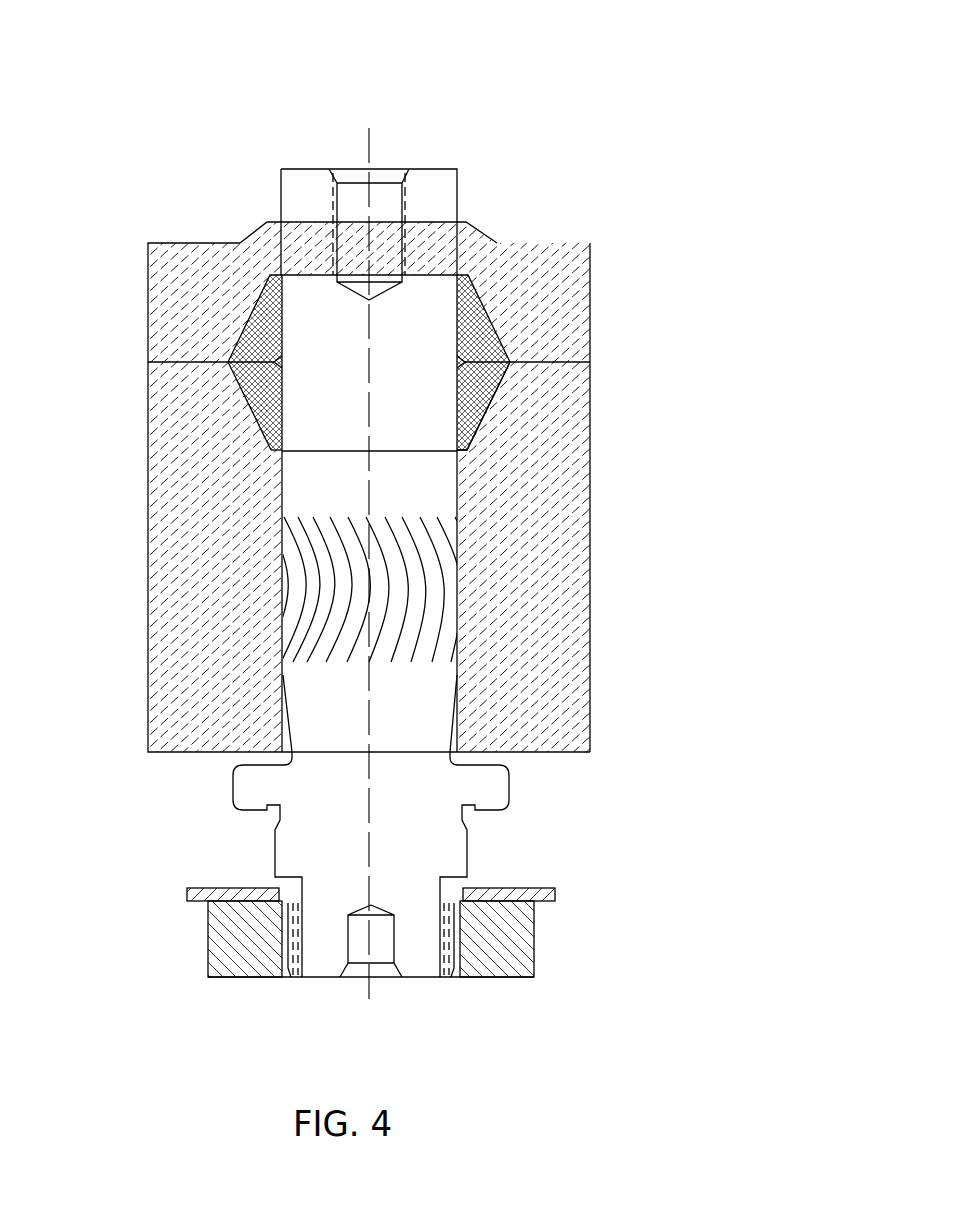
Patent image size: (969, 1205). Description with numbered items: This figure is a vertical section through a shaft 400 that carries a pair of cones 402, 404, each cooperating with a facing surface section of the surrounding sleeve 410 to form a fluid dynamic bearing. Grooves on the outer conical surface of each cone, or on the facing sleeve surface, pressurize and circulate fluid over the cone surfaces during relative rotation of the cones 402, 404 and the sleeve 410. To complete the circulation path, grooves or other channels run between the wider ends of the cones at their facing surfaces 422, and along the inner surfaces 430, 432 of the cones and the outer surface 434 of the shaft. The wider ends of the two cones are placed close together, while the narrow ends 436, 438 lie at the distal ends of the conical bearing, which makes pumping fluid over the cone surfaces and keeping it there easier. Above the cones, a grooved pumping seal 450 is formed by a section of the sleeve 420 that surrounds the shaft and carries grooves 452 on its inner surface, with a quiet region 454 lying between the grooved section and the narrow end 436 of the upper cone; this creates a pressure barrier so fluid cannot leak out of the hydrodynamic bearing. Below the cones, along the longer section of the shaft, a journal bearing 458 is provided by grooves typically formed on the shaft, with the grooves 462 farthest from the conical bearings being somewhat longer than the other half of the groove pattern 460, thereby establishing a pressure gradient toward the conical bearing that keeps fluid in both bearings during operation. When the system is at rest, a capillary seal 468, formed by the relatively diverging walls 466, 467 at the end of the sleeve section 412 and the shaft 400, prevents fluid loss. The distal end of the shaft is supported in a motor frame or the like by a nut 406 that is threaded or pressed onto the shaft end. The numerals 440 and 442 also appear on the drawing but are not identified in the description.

The shaft 400 is at (413, 231).
The cone 402 is at (495, 332).
The cone 404 is at (492, 398).
The nut 406 is at (512, 917).
The sleeve 410 is at (588, 350).
The sleeve section 412 is at (591, 458).
The sleeve section 420 is at (482, 307).
The facing surfaces 422 is at (496, 387).
The inner surface of cone 430 is at (458, 405).
The inner surface of cone 432 is at (458, 338).
The outer surface of shaft 434 is at (283, 334).
The narrow end of cone 436 is at (282, 273).
The narrow end of cone 438 is at (273, 450).
The insert lower face 440 is at (243, 391).
The insert upper face 442 is at (242, 348).
The grooved pumping seal 450 is at (441, 273).
The grooves 452 is at (438, 232).
The quiet region 454 is at (467, 223).
The journal bearing 458 is at (458, 550).
The groove pattern 460 is at (580, 493).
The grooves 462 is at (436, 630).
The diverging wall 466 is at (458, 722).
The diverging wall 467 is at (450, 741).
The capillary seal 468 is at (455, 748).